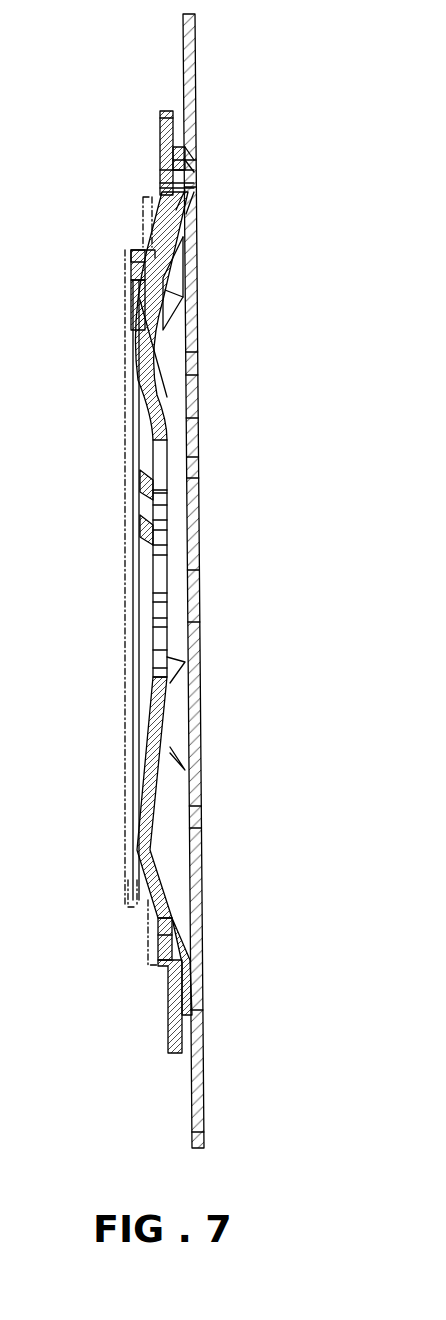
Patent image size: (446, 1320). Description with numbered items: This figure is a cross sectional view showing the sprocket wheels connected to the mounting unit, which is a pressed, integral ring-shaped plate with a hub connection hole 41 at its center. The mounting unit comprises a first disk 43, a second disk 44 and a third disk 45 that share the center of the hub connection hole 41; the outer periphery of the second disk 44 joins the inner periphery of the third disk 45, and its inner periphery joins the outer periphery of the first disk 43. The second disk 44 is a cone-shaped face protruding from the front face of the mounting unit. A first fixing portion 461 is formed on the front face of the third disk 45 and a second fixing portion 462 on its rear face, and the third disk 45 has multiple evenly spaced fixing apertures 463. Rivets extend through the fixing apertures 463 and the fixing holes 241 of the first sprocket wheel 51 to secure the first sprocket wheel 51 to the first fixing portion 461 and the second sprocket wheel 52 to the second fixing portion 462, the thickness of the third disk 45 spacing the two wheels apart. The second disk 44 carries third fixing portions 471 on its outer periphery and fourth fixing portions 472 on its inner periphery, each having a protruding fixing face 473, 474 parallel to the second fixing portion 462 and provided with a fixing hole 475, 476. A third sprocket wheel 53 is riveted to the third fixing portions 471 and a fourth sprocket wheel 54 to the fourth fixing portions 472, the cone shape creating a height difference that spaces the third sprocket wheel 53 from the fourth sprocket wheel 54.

The first sprocket wheel 51 is at (191, 50).
The second sprocket wheel 52 is at (160, 111).
The third disk 45 is at (178, 148).
The first fixing portion 461 is at (186, 157).
The second fixing portion 462 is at (172, 165).
The fixing apertures 463 is at (180, 179).
The fixing holes 241 is at (191, 192).
The third sprocket wheel 53 is at (142, 197).
The fourth fixing portions 472 is at (125, 242).
The fixing face 474 is at (132, 260).
The fixing hole 476 is at (138, 291).
The second disk 44 is at (176, 229).
The first disk 43 is at (165, 459).
The hub connection hole 41 is at (163, 581).
The fixing hole 475 is at (164, 931).
The fourth sprocket wheel 54 is at (128, 874).
The fixing face 473 is at (158, 953).
The third fixing portions 471 is at (149, 971).